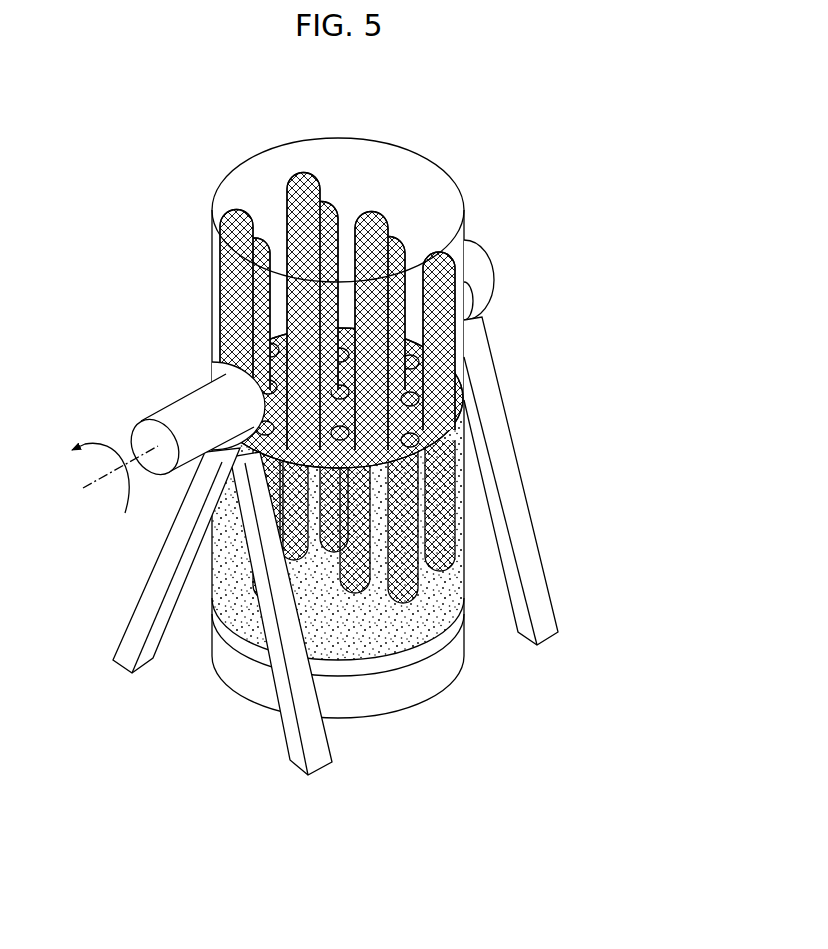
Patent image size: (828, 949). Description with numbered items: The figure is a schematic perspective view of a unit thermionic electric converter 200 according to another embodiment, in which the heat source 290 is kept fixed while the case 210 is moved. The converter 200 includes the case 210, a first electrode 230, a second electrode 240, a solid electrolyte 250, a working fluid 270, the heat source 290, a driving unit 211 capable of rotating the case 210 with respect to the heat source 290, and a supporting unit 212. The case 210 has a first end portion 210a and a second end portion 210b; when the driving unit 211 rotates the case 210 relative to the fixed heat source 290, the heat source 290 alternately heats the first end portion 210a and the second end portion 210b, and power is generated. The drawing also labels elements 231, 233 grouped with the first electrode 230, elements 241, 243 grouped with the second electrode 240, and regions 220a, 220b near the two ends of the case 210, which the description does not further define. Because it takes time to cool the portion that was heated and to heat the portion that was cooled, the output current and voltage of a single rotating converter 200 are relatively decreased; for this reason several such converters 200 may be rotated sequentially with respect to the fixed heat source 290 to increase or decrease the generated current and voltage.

The unit thermionic electric converter 200 is at (532, 101).
The case 210 is at (466, 338).
The first end portion 210a is at (452, 212).
The second end portion 210b is at (446, 645).
The driving unit 211 is at (160, 413).
The supporting unit 212 is at (143, 580).
The upper electrode region 220a is at (408, 216).
The lower electrode region 220b is at (412, 620).
The first electrode 230 is at (576, 230).
The boss dome 231 is at (472, 260).
The boss protrusion 233 is at (470, 283).
The second electrode 240 is at (576, 462).
The lower electrode rods 241 is at (441, 512).
The lower electrode rods (rear) 243 is at (438, 490).
The solid electrolyte 250 is at (466, 428).
The working fluid 270 is at (452, 572).
The heat source 290 is at (430, 680).